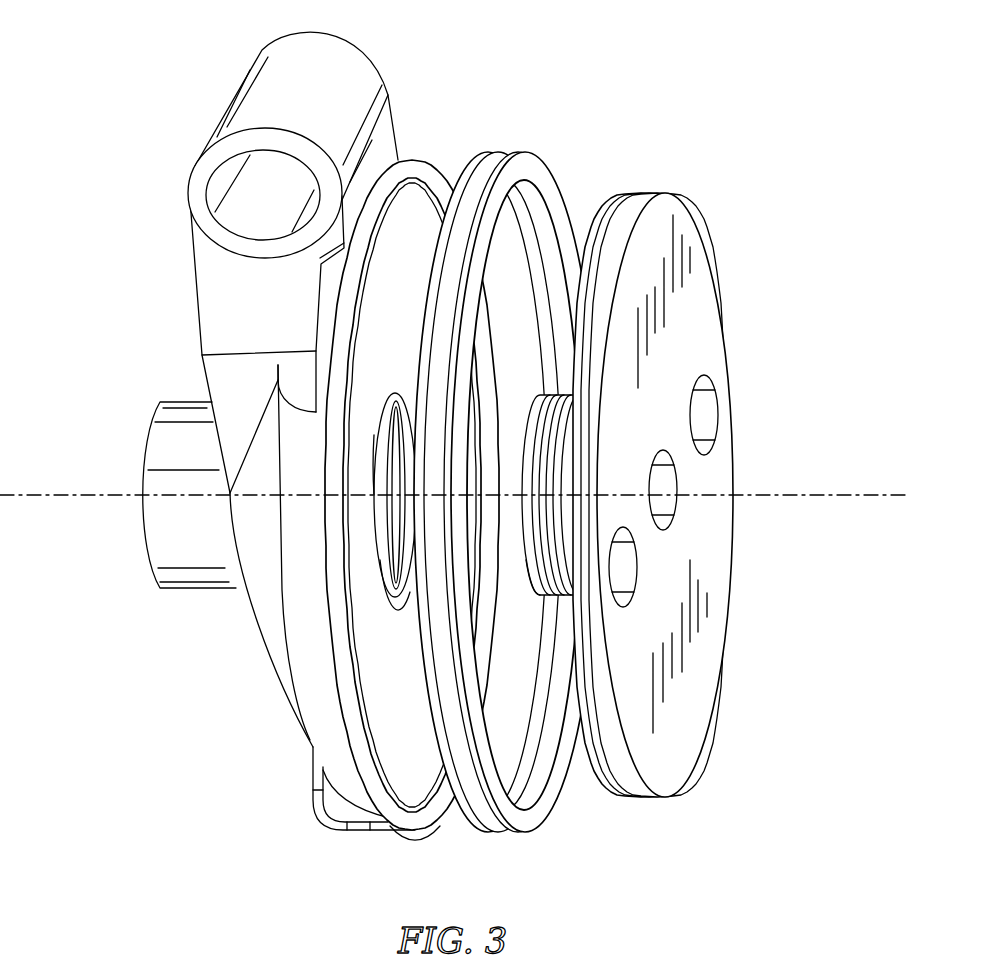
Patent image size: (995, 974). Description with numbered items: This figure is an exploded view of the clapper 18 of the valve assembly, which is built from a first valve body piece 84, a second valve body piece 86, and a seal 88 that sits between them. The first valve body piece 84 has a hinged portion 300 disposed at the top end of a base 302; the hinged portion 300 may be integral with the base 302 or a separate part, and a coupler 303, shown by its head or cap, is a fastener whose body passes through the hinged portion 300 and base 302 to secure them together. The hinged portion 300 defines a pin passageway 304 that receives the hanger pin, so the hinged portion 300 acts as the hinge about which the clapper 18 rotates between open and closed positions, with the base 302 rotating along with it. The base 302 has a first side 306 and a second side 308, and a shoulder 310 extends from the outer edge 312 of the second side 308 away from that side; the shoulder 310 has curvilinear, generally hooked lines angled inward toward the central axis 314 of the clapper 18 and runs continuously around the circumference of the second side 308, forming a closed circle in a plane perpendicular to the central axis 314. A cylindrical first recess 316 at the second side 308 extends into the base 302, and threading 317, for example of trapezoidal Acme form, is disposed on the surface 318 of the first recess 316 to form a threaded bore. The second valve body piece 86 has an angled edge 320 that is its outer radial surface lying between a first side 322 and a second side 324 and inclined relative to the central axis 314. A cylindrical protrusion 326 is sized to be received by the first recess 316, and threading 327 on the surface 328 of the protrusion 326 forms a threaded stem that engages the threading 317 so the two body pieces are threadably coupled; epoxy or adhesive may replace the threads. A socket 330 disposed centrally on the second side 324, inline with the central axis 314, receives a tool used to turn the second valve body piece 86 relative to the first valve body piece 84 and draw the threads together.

The clapper 18 is at (239, 376).
The first valve body piece 84 is at (239, 376).
The second valve body piece 86 is at (698, 470).
The seal 88 is at (508, 150).
The hinged portion 300 is at (344, 34).
The base 302 is at (272, 548).
The coupler 303 is at (145, 448).
The pin passageway 304 is at (218, 180).
The first side 306 is at (270, 658).
The second side 308 is at (424, 725).
The shoulder 310 is at (430, 830).
The outer edge 312 is at (381, 808).
The central axis 314 is at (30, 494).
The first recess 316 is at (397, 399).
The threading 317 is at (399, 599).
The surface 318 is at (374, 512).
The angled edge 320 is at (618, 214).
The first side 322 is at (596, 222).
The second side 324 is at (690, 470).
The protrusion 326 is at (536, 412).
The threading 327 is at (574, 482).
The surface 328 is at (535, 592).
The socket 330 is at (672, 484).